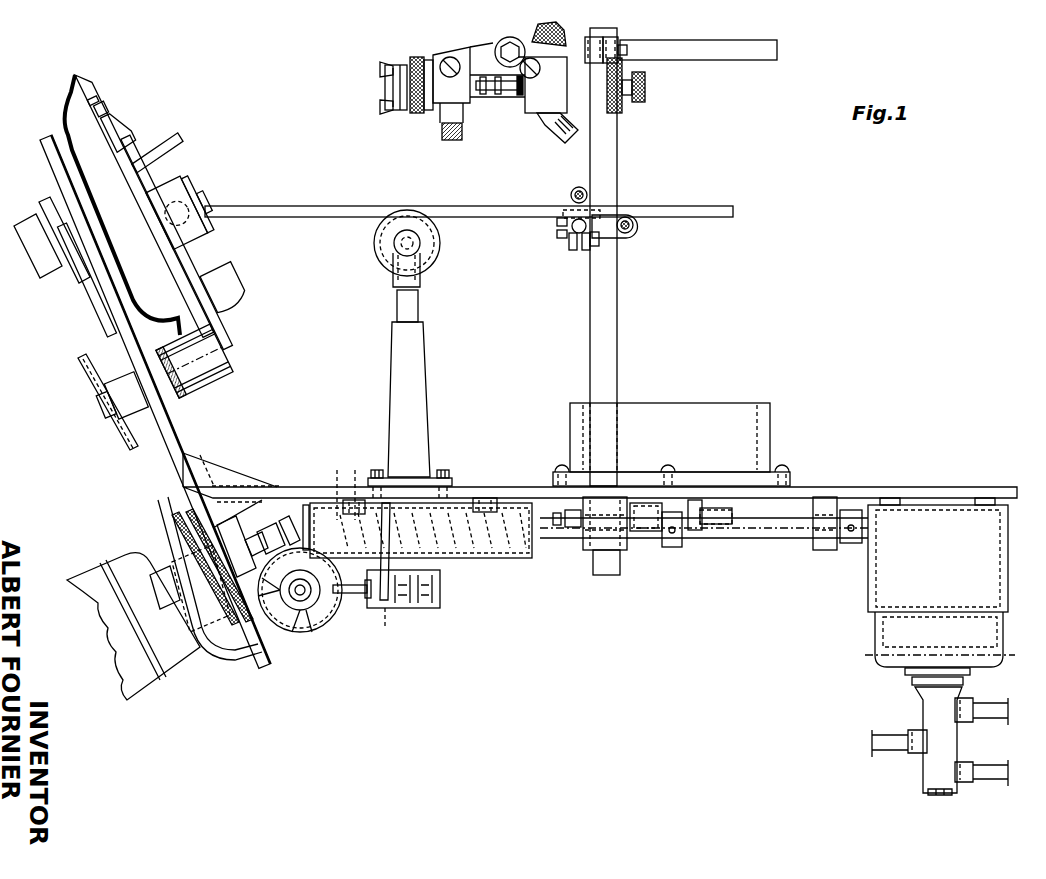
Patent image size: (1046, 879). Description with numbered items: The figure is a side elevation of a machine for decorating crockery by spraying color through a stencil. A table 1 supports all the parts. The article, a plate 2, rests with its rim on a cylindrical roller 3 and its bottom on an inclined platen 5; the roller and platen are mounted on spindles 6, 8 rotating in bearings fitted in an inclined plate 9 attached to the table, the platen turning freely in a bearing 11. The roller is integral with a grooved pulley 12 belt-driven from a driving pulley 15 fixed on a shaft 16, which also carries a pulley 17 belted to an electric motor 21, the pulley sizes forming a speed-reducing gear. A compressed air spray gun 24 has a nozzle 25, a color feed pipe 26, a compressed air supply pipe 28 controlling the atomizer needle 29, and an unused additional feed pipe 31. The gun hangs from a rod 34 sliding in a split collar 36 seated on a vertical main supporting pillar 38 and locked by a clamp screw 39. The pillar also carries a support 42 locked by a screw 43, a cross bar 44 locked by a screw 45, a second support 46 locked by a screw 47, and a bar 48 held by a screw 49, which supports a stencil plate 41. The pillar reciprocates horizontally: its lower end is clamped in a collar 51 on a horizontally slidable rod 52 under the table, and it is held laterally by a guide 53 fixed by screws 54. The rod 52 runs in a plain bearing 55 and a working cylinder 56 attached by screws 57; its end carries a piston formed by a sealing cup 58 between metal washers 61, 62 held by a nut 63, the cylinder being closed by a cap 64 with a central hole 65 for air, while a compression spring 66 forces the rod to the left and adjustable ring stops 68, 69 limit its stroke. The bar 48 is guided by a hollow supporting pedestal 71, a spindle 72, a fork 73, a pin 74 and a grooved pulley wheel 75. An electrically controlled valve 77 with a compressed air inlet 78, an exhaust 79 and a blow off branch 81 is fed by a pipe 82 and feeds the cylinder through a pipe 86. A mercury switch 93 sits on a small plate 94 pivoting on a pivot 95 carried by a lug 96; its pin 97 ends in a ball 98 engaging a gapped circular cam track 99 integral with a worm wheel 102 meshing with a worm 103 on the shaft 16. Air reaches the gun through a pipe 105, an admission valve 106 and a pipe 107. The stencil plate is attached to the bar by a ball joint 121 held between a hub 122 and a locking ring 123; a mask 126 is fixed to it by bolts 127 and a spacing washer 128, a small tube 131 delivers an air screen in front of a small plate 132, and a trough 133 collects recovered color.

The table 1 is at (818, 487).
The plate 2 is at (165, 305).
The cylindrical roller 3 is at (215, 364).
The inclined platen 5 is at (96, 296).
The spindle 6 is at (105, 402).
The spindle 8 is at (75, 262).
The inclined plate 9 is at (165, 430).
The bearing 11 is at (36, 238).
The grooved pulley 12 is at (108, 436).
The driving pulley 15 is at (178, 604).
The shaft 16 is at (228, 552).
The pulley 17 is at (184, 522).
The electric motor 21 is at (137, 552).
The spray gun 24 is at (480, 55).
The nozzle 25 is at (398, 88).
The color feed pipe 26 is at (460, 140).
The compressed air supply pipe 28 is at (536, 32).
The atomizer needle 29 is at (510, 93).
The additional compressed air feed pipe 31 is at (556, 132).
The rod 34 is at (750, 52).
The split collar 36 is at (618, 40).
The main supporting pillar 38 is at (617, 316).
The clamp screw 39 is at (627, 52).
The stencil plate 41 is at (190, 258).
The support 42 is at (636, 238).
The screw 43 is at (634, 226).
The cross bar 44 is at (560, 238).
The screw 45 is at (566, 210).
The second support 46 is at (575, 250).
The screw 47 is at (600, 242).
The bar 48 is at (306, 206).
The screw 49 is at (578, 187).
The collar 51 is at (587, 550).
The horizontally slidable rod 52 is at (768, 540).
The guide 53 is at (770, 430).
The screws 54 is at (790, 470).
The plain bearing 55 is at (826, 550).
The working cylinder 56 is at (527, 558).
The screws 57 is at (400, 498).
The sealing cup 58 is at (360, 578).
The metal washer 61 is at (336, 487).
The metal washer 62 is at (357, 487).
The nut 63 is at (343, 514).
The cap 64 is at (306, 505).
The central hole 65 is at (296, 523).
The compression spring 66 is at (440, 553).
The adjustable ring stop 68 is at (670, 547).
The adjustable ring stop 69 is at (851, 544).
The hollow supporting pedestal 71 is at (410, 370).
The spindle 72 is at (418, 300).
The fork 73 is at (420, 281).
The pin 74 is at (418, 249).
The grooved pulley wheel 75 is at (440, 237).
The electrically controlled valve 77 is at (929, 646).
The compressed air inlet 78 is at (964, 762).
The compressed air exhaust 79 is at (914, 730).
The blow off branch 81 is at (975, 703).
The pipe 82 is at (990, 766).
The pipe 86 is at (883, 734).
The mercury switch 93 is at (436, 598).
The small plate 94 is at (420, 608).
The pivot 95 is at (384, 625).
The lug 96 is at (390, 564).
The pin 97 is at (358, 594).
The ball 98 is at (318, 610).
The circular cam track 99 is at (312, 622).
The worm wheel 102 is at (300, 632).
The worm 103 is at (268, 526).
The pipe 105 is at (730, 512).
The admission valve 106 is at (646, 531).
The pipe 107 is at (586, 47).
The ball joint 121 is at (205, 196).
The hub 122 is at (160, 190).
The locking ring 123 is at (190, 180).
The mask 126 is at (124, 138).
The bolts 127 is at (108, 107).
The spacing washer 128 is at (98, 98).
The small tube 131 is at (180, 136).
The small plate 132 is at (120, 160).
The trough 133 is at (247, 286).